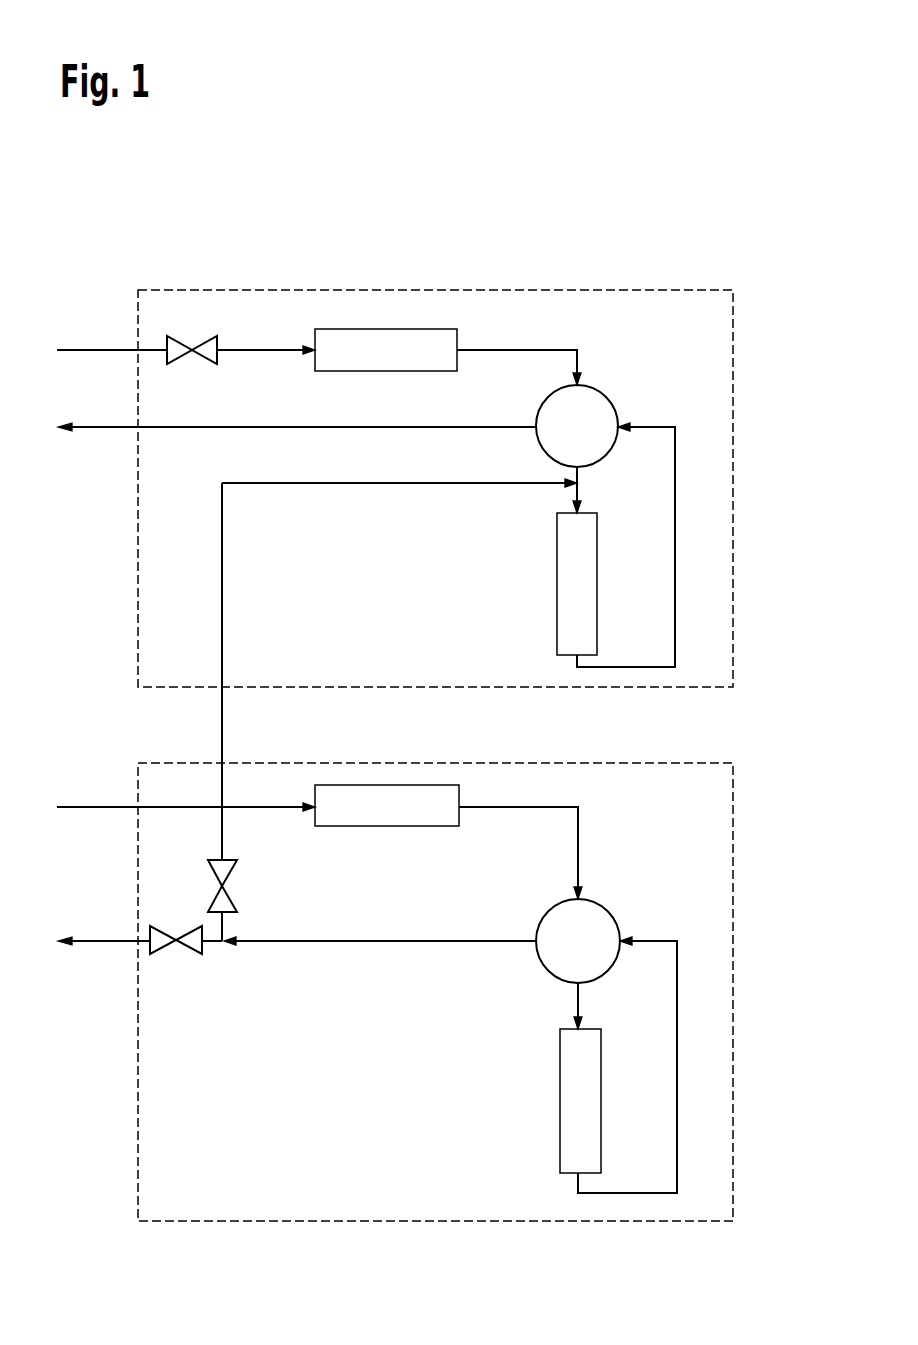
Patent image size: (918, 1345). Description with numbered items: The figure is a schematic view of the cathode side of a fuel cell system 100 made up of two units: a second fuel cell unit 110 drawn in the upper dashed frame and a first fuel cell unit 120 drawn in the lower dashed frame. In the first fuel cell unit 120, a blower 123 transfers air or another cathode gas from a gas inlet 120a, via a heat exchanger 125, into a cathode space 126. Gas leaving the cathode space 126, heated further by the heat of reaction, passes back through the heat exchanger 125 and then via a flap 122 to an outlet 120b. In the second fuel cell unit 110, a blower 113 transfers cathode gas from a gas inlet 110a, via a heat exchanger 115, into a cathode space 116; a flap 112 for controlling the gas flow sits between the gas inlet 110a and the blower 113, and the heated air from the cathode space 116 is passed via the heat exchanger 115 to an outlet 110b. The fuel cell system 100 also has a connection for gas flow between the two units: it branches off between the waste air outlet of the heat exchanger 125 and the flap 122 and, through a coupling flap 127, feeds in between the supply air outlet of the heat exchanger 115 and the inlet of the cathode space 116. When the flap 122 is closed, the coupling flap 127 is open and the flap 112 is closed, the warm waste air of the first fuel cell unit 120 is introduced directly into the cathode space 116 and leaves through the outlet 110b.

The fuel cell system 100 is at (660, 257).
The second fuel cell unit 110 is at (138, 622).
The gas inlet 110a is at (104, 350).
The outlet 110b is at (105, 430).
The flap 112 is at (193, 349).
The blower 113 is at (388, 329).
The heat exchanger 115 is at (606, 397).
The cathode space 116 is at (557, 580).
The first fuel cell unit 120 is at (138, 1154).
The gas inlet 120a is at (105, 810).
The outlet 120b is at (105, 944).
The flap 122 is at (176, 944).
The blower 123 is at (386, 826).
The heat exchanger 125 is at (608, 911).
The cathode space 126 is at (560, 1100).
The coupling flap 127 is at (228, 888).